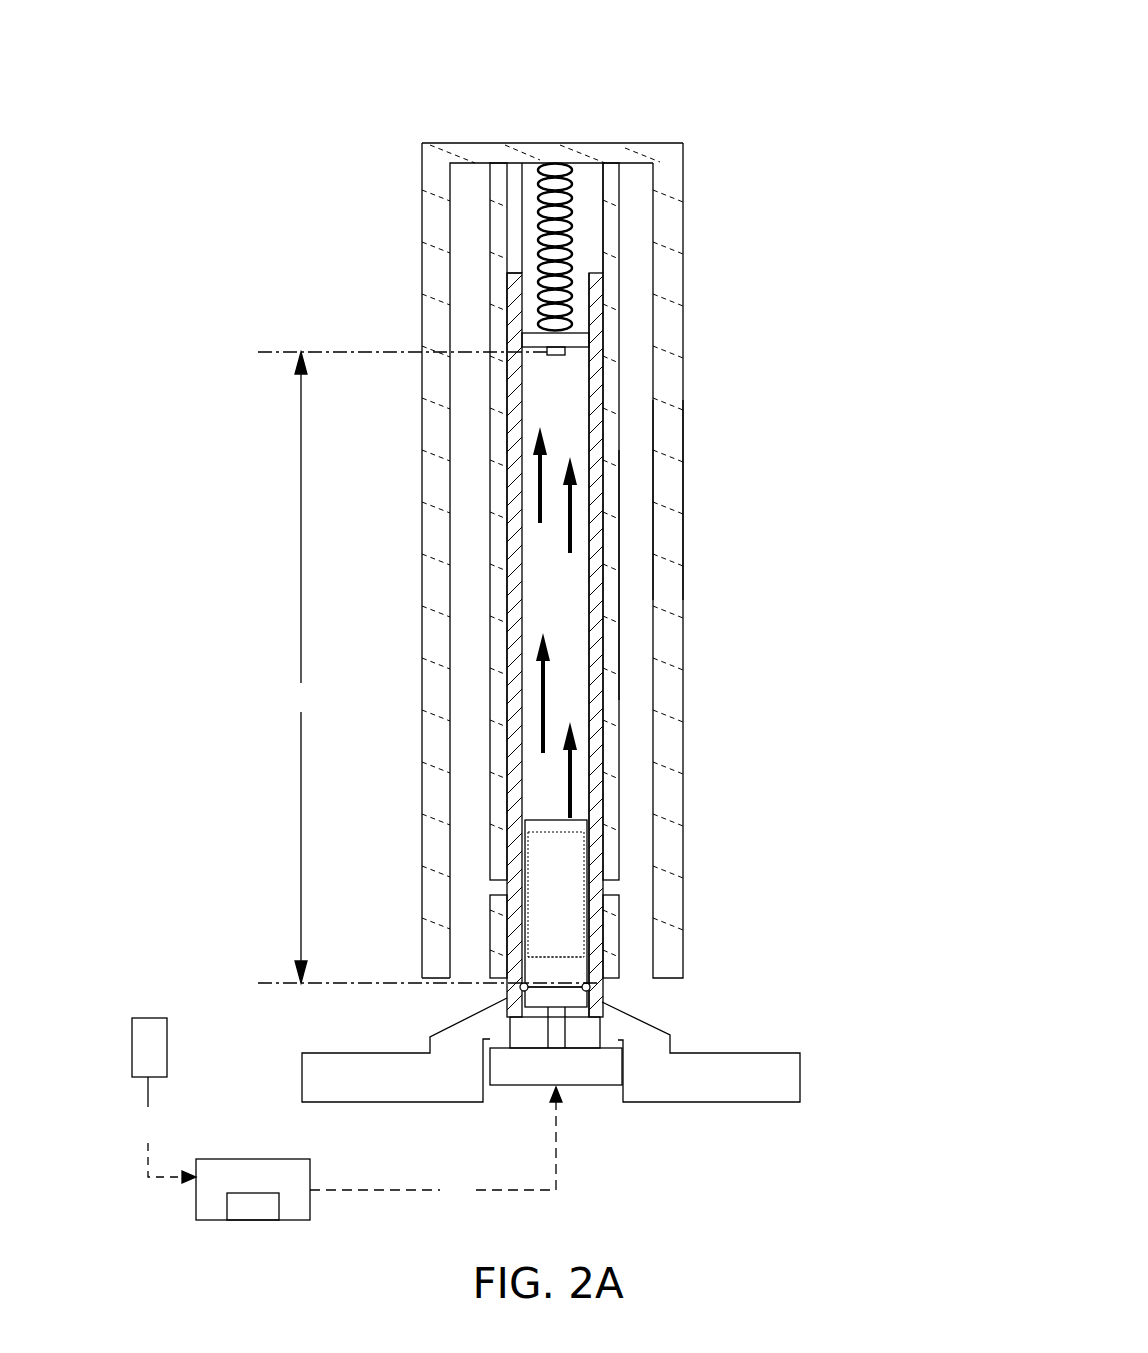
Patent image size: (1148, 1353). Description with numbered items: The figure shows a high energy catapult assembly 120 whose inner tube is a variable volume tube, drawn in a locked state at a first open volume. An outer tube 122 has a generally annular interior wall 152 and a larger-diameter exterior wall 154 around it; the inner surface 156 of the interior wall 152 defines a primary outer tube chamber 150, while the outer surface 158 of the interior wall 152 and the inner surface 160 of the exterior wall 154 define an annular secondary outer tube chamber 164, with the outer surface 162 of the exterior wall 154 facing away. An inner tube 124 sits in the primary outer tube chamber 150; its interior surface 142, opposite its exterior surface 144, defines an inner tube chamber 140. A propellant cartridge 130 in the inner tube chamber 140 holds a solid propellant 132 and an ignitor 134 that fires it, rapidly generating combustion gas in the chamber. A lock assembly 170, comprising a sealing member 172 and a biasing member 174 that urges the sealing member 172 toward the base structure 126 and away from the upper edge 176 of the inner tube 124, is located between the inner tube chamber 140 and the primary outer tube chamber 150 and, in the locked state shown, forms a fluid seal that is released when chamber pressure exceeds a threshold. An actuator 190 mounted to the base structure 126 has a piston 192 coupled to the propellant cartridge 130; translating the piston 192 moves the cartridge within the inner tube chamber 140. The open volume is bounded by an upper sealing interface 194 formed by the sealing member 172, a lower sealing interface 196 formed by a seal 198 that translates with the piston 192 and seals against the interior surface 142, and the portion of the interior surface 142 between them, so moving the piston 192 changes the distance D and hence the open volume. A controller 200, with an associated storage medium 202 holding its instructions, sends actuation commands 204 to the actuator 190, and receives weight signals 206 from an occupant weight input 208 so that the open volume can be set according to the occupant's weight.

The high energy catapult assembly 120 is at (774, 95).
The outer tube 122 is at (650, 152).
The inner tube 124 is at (597, 700).
The base structure 126 is at (770, 1065).
The propellant cartridge 130 is at (588, 852).
The propellant 132 is at (556, 894).
The ignitor 134 is at (556, 973).
The inner tube chamber 140 is at (559, 652).
The interior surface 142 is at (590, 593).
The exterior surface 144 is at (507, 557).
The primary outer tube chamber 150 is at (585, 240).
The interior wall 152 is at (613, 333).
The exterior wall 154 is at (672, 372).
The inner surface 156 is at (602, 193).
The outer surface 158 is at (490, 197).
The inner surface 160 is at (653, 480).
The outer surface 162 is at (683, 498).
The secondary outer tube chamber 164 is at (652, 574).
The lock assembly 170 is at (345, 268).
The sealing member 172 is at (537, 343).
The biasing member 174 is at (545, 293).
The upper edge 176 is at (515, 273).
The actuator 190 is at (597, 1076).
The piston 192 is at (588, 1001).
The upper sealing interface 194 is at (547, 355).
The lower sealing interface 196 is at (587, 987).
The seal 198 is at (524, 992).
The controller 200 is at (253, 1221).
The storage medium 202 is at (257, 1212).
The actuation commands 204 is at (436, 1146).
The weight signals 206 is at (160, 1130).
The occupant weight input 208 is at (158, 1055).